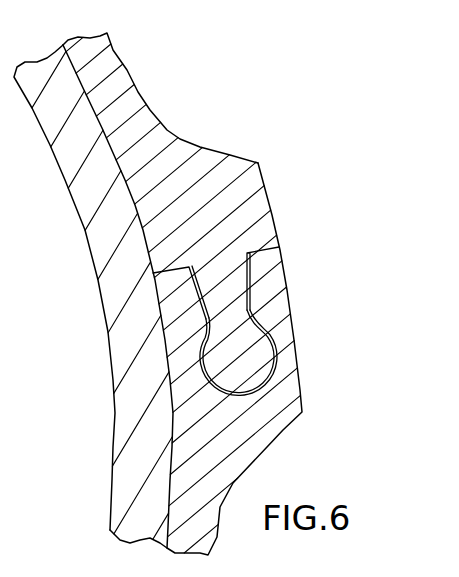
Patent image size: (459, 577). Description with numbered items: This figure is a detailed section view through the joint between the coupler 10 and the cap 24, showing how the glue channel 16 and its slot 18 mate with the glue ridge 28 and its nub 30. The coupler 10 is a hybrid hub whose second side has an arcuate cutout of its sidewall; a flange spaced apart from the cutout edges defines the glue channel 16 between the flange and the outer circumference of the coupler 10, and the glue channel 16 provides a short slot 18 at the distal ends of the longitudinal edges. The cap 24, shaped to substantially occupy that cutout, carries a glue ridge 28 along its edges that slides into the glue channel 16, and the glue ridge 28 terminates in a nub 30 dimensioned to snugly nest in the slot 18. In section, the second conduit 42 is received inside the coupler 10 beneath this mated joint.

The coupler 10 is at (273, 427).
The cap 24 is at (147, 117).
The second conduit 42 is at (127, 412).
The glue channel 16 is at (160, 310).
The glue ridge 28 is at (238, 270).
The nub 30 is at (252, 347).
The slot 18 is at (273, 380).